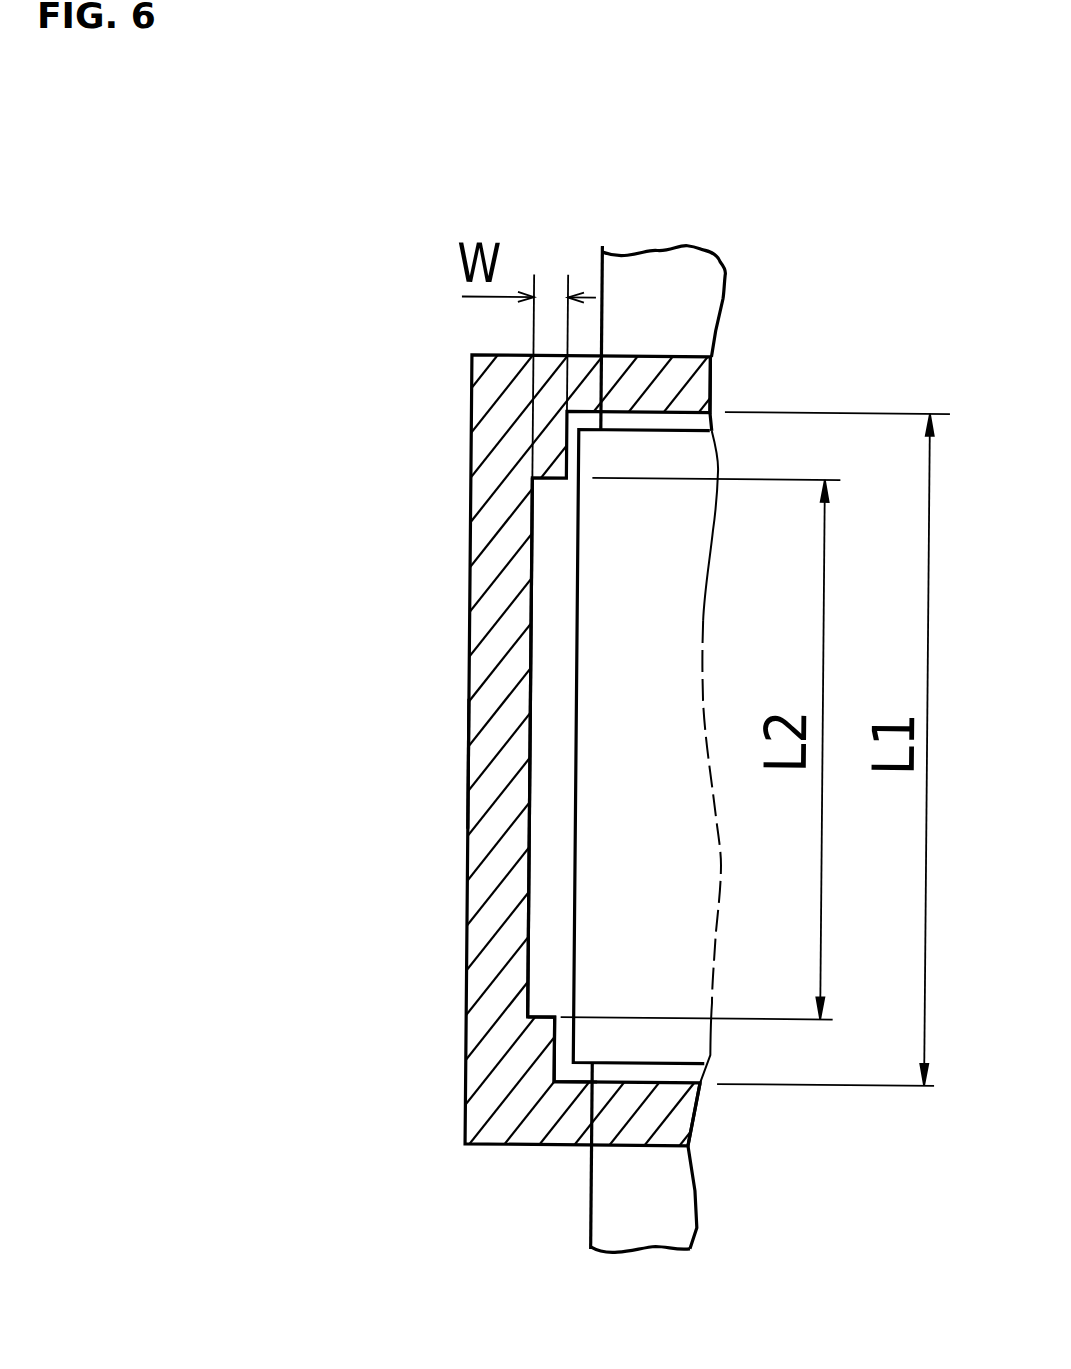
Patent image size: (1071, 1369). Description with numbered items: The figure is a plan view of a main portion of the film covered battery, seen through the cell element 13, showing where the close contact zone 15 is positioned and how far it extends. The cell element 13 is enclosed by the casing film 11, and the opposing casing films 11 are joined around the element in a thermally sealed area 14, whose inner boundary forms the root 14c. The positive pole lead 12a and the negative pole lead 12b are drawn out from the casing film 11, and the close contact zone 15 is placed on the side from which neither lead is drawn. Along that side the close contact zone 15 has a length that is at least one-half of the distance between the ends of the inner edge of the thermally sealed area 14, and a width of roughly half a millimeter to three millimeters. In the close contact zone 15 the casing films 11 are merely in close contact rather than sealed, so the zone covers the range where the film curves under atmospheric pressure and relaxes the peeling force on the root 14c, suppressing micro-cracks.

The casing film 11 is at (472, 388).
The positive pole lead 12a is at (703, 297).
The negative pole lead 12b is at (656, 1206).
The cell element 13 is at (668, 536).
The thermally sealed area 14 is at (483, 1089).
The root of thermally sealed area 14c is at (528, 676).
The close contact zone 15 is at (550, 763).